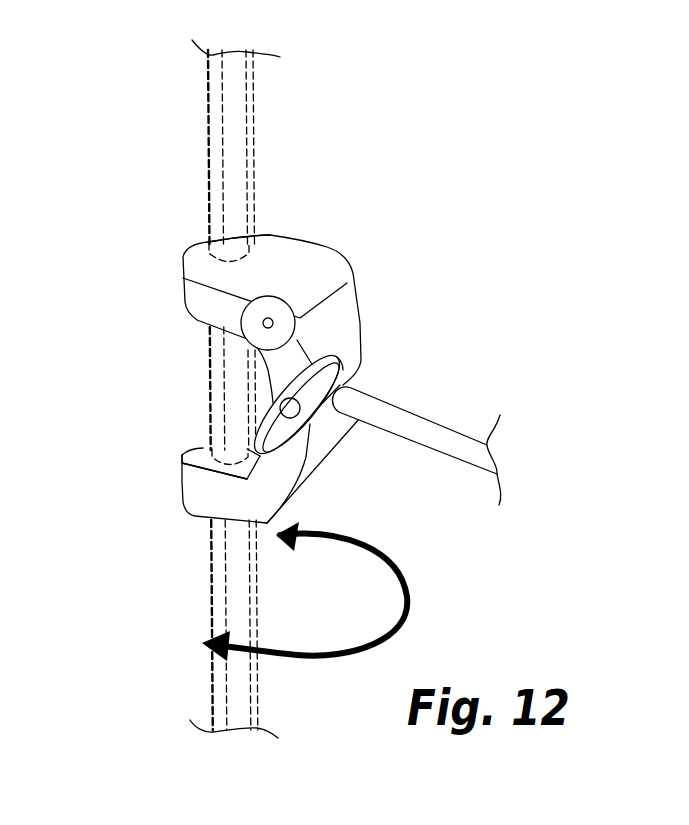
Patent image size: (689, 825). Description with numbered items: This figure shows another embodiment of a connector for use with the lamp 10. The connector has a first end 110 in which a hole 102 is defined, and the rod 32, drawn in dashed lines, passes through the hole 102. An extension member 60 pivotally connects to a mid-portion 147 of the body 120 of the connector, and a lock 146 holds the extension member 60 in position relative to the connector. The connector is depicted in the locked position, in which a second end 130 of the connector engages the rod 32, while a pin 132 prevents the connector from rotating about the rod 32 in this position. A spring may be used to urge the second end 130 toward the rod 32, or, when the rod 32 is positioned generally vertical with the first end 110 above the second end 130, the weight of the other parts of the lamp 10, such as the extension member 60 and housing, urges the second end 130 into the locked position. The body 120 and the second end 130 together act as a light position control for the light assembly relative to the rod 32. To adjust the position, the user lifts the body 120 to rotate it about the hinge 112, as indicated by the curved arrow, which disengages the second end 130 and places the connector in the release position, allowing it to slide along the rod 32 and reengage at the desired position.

The lamp 10 is at (420, 265).
The rod 32 is at (228, 110).
The extension member 60 is at (435, 435).
The hole 102 is at (254, 240).
The first end 110 is at (305, 273).
The hinge 112 is at (242, 320).
The body 120 is at (289, 462).
The second end 130 is at (198, 488).
The pin 132 is at (183, 456).
The lock 146 is at (262, 438).
The mid-portion 147 is at (350, 371).